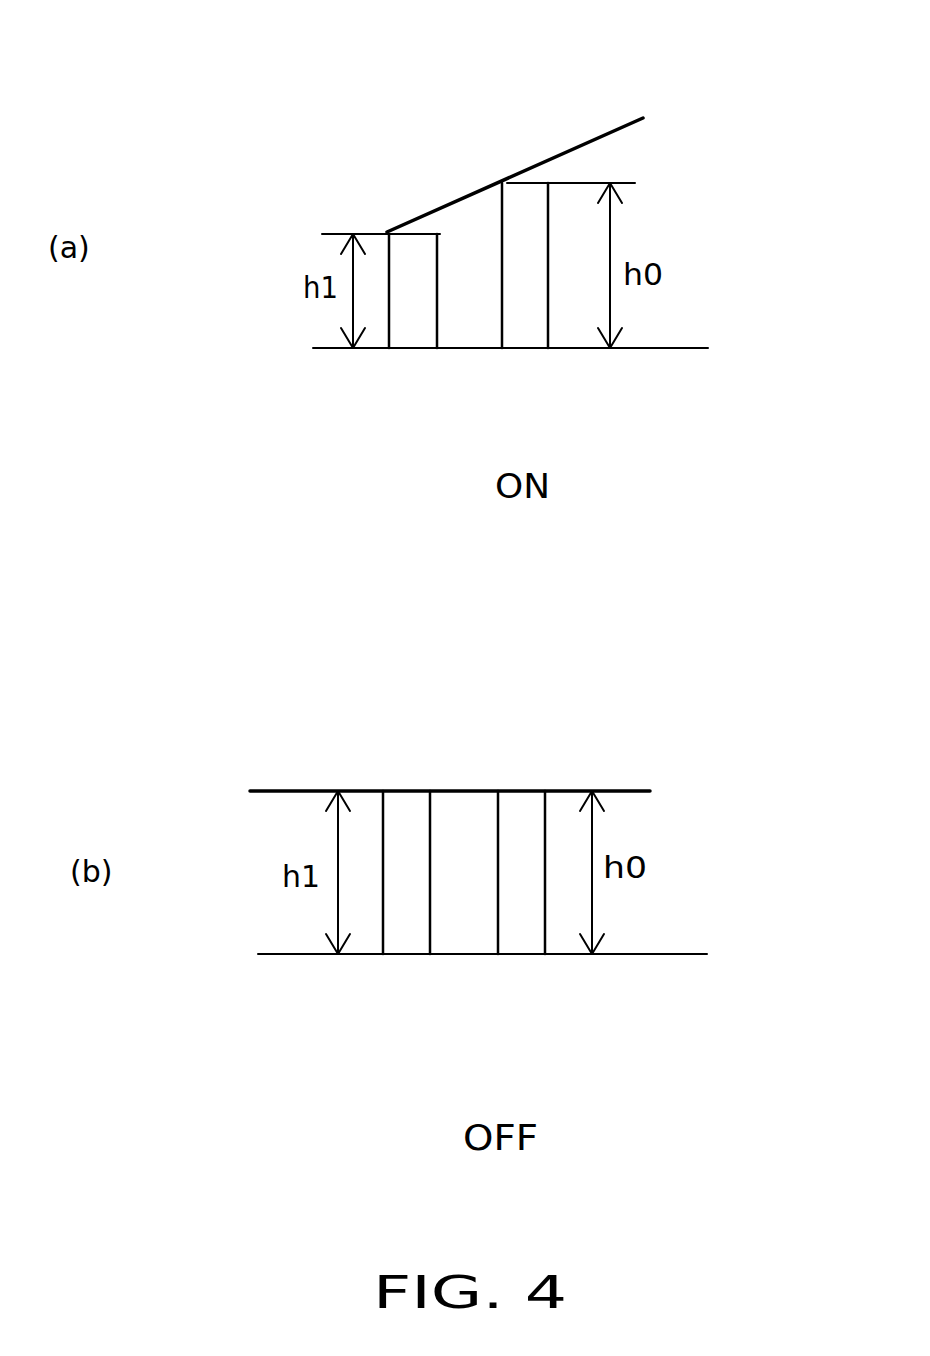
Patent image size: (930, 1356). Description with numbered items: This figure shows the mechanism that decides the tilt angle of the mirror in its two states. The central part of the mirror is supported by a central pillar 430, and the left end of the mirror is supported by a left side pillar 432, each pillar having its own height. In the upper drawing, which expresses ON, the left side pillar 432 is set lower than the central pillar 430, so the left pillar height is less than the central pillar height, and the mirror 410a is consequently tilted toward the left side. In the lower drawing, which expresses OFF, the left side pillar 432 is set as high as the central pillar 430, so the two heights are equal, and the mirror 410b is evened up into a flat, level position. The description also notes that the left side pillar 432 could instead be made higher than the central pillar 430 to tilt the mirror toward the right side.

The mirror 410a is at (600, 135).
The mirror 410b is at (607, 788).
The left side pillar 432 is at (408, 325).
The central pillar 430 is at (517, 325).